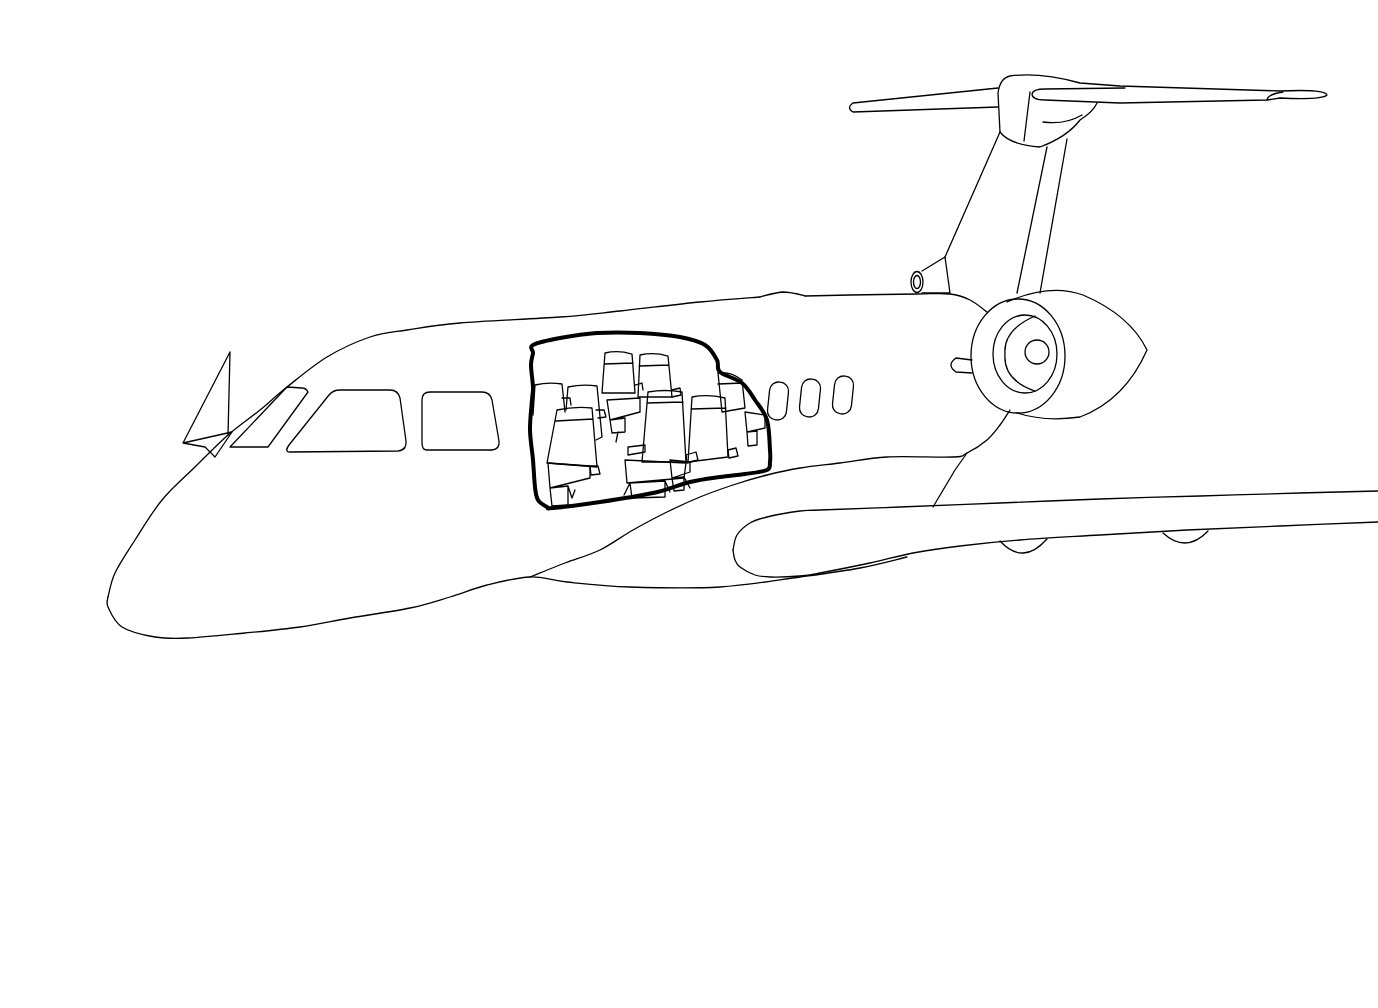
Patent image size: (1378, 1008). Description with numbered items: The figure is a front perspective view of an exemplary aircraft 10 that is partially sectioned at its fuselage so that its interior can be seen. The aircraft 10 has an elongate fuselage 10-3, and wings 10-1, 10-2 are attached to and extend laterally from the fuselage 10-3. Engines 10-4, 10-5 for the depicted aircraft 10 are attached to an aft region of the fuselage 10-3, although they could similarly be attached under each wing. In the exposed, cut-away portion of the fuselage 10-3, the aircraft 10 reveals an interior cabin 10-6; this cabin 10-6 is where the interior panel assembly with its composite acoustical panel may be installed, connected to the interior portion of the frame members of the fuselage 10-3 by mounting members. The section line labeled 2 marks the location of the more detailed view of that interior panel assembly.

The aircraft 10 is at (407, 645).
The wing 10-1 is at (1088, 517).
The wing 10-2 is at (205, 445).
The fuselage 10-3 is at (880, 341).
The engine 10-4 is at (1120, 358).
The engine 10-5 is at (763, 305).
The interior cabin 10-6 is at (597, 369).
The section line for FIG. 2 is at (742, 492).